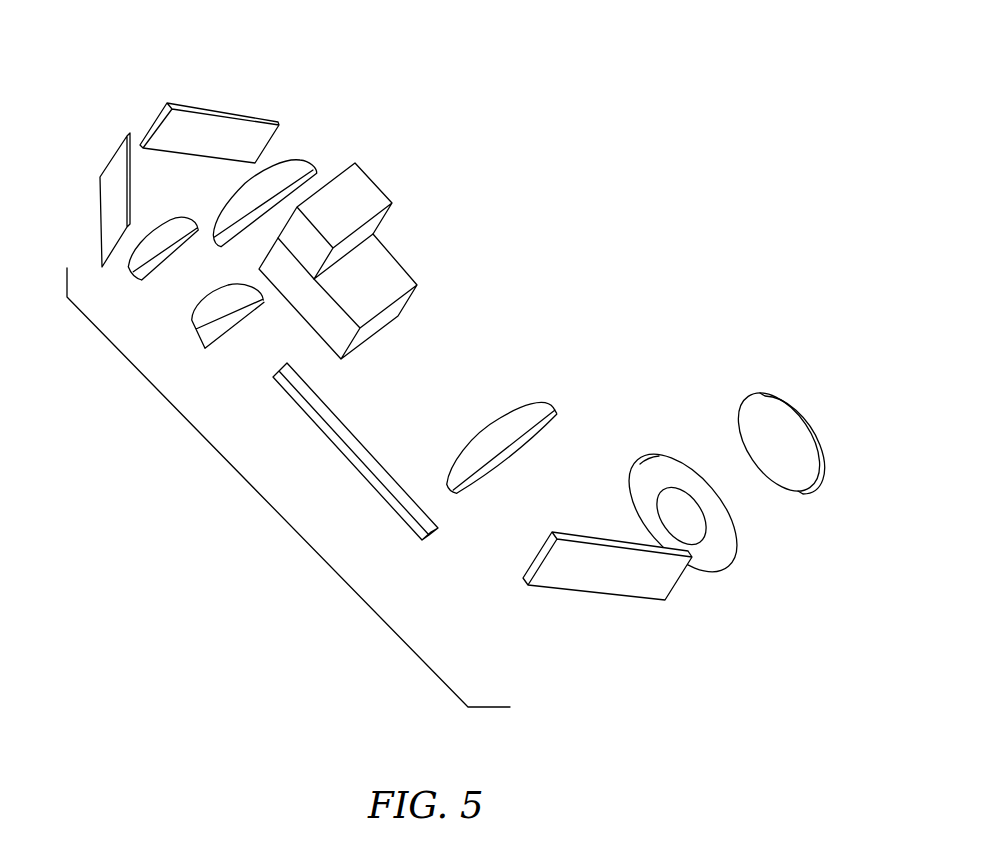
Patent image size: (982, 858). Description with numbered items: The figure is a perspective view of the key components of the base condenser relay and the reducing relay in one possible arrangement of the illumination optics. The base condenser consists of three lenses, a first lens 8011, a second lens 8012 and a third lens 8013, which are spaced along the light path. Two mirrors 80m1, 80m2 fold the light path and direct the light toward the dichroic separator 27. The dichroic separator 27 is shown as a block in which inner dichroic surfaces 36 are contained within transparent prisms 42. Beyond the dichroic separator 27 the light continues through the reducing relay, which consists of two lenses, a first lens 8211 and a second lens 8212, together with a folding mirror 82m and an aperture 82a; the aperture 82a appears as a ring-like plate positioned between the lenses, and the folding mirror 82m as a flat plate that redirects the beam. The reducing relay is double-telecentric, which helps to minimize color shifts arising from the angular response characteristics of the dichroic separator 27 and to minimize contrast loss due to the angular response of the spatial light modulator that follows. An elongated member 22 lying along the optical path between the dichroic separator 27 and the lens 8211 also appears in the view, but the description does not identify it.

The dichroic separator 27 is at (476, 240).
The mirror 80m1 is at (118, 172).
The mirror 80m2 is at (205, 122).
The lens 8013 is at (290, 173).
The lens 8012 is at (142, 277).
The lens 8011 is at (203, 345).
The inner dichroic surfaces 36 is at (388, 199).
The transparent prisms 42 is at (278, 259).
The guide rail 22 is at (327, 415).
The lens 8211 is at (502, 430).
The lens 8212 is at (755, 413).
The aperture 82a is at (658, 473).
The folding mirror 82m is at (603, 577).